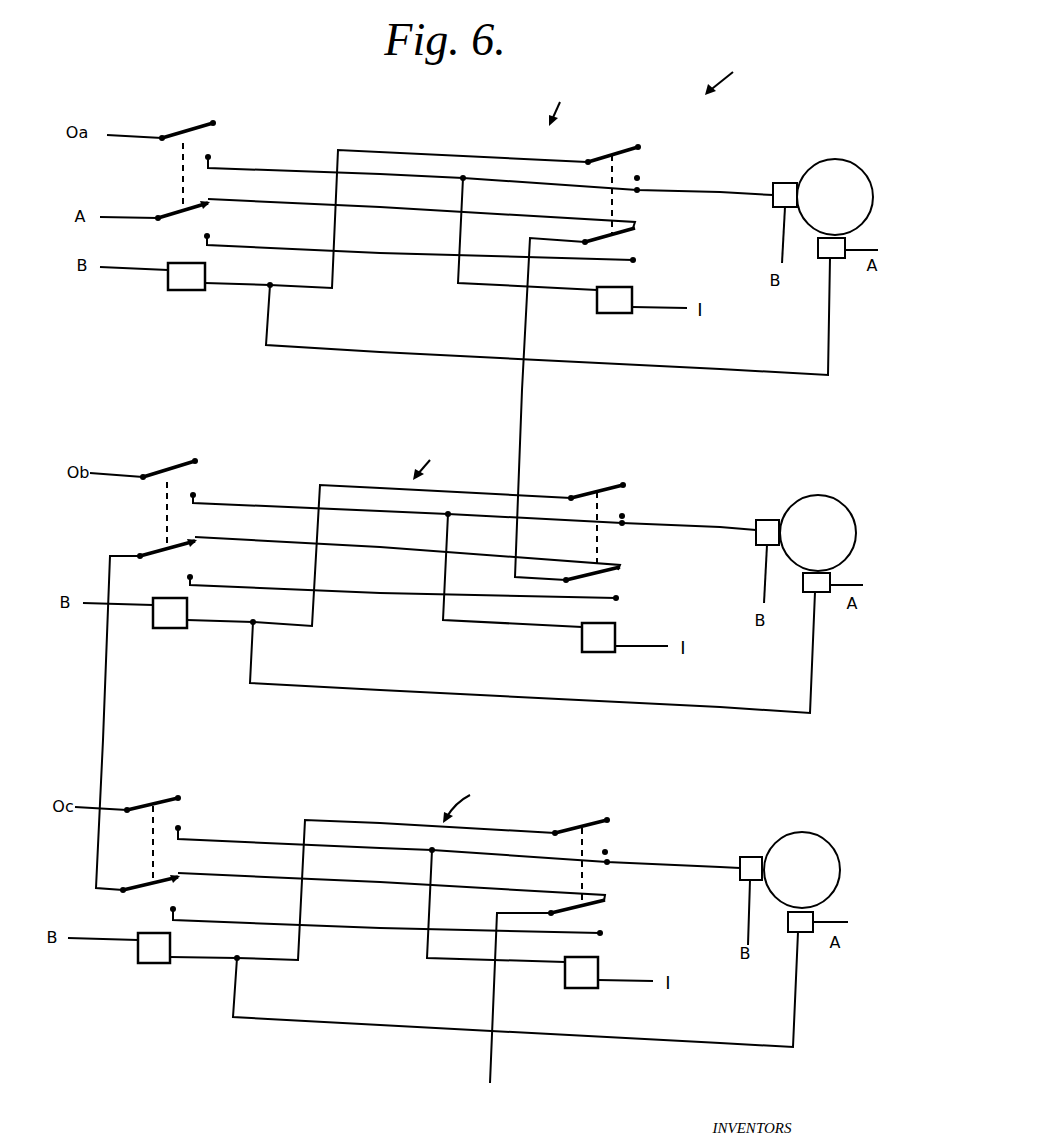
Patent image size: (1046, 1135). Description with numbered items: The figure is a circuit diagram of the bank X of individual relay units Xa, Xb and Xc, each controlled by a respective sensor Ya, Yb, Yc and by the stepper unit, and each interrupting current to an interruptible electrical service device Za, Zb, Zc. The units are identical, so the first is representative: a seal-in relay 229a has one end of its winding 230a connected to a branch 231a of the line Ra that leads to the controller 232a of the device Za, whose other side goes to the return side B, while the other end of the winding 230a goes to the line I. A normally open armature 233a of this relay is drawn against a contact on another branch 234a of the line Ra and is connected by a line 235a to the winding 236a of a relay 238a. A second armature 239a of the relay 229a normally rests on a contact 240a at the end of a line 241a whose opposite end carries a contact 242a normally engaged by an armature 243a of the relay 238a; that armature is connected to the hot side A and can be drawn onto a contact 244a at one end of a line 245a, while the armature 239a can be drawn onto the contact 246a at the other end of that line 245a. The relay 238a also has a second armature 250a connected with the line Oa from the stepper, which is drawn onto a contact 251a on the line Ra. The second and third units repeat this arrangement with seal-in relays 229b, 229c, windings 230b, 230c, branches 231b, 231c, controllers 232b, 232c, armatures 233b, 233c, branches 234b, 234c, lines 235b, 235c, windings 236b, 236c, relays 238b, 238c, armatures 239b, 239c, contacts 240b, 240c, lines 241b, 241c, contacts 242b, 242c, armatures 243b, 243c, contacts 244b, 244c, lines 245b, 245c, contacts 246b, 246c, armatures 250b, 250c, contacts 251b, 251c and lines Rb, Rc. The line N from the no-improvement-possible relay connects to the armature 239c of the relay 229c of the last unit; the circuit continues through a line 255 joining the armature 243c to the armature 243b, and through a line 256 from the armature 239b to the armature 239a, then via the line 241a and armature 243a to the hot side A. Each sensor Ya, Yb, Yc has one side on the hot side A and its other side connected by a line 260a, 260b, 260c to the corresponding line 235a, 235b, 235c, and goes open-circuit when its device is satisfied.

The second armature 250a is at (195, 127).
The contact 251a is at (211, 156).
The contact 242a is at (208, 202).
The armature 243a is at (168, 213).
The contact 244a is at (211, 239).
The winding 236a is at (205, 282).
The relay 238a is at (182, 312).
The line 235a is at (336, 282).
The line 260a is at (270, 312).
The line 241a is at (448, 210).
The line 245a is at (433, 256).
The branch 231a is at (468, 286).
The normally open armature 233a is at (620, 152).
The branch 234a is at (640, 178).
The contact 240a is at (636, 228).
The second armature 239a is at (620, 240).
The contact 246a is at (636, 262).
The winding 230a is at (597, 300).
The seal in relay 229a is at (615, 330).
The controller 232a is at (781, 185).
The second armature 250b is at (180, 467).
The contact 251b is at (197, 494).
The contact 242b is at (193, 543).
The armature 243b is at (178, 553).
The contact 244b is at (194, 576).
The winding 236b is at (188, 617).
The relay 238b is at (172, 648).
The line 235b is at (318, 614).
The line 260b is at (254, 650).
The line 241b is at (418, 546).
The line 245b is at (417, 588).
The branch 231b is at (497, 628).
The normally open armature 233b is at (602, 490).
The branch 234b is at (625, 515).
The contact 240b is at (622, 566).
The second armature 239b is at (612, 580).
The contact 246b is at (619, 600).
The winding 230b is at (590, 636).
The seal in relay 229b is at (600, 664).
The controller 232b is at (768, 520).
The second armature 250c is at (165, 800).
The contact 251c is at (182, 827).
The contact 242c is at (177, 876).
The armature 243c is at (135, 894).
The contact 244c is at (177, 908).
The winding 236c is at (172, 952).
The relay 238c is at (151, 983).
The line 235c is at (303, 950).
The line 260c is at (255, 1022).
The line 241c is at (407, 882).
The line 245c is at (398, 923).
The branch 231c is at (462, 960).
The normally open armature 233c is at (592, 825).
The branch 234c is at (608, 852).
The contact 240c is at (605, 900).
The second armature 239c is at (595, 910).
The contact 246c is at (603, 935).
The winding 230c is at (568, 975).
The seal in relay 229c is at (580, 1002).
The controller 232c is at (752, 857).
The line 255 is at (105, 757).
The line 256 is at (527, 415).
The bank of individual relay units X is at (724, 69).
The relay unit Xa is at (564, 106).
The relay unit Xb is at (433, 459).
The relay unit Xc is at (469, 803).
The line Ra is at (748, 196).
The line Rb is at (727, 533).
The line Rc is at (718, 873).
The electrical service device Za is at (835, 197).
The electrical service device Zb is at (818, 533).
The electrical service device Zc is at (802, 870).
The sensor Ya is at (822, 260).
The sensor Yb is at (808, 595).
The sensor Yc is at (790, 933).
The line N is at (515, 1010).